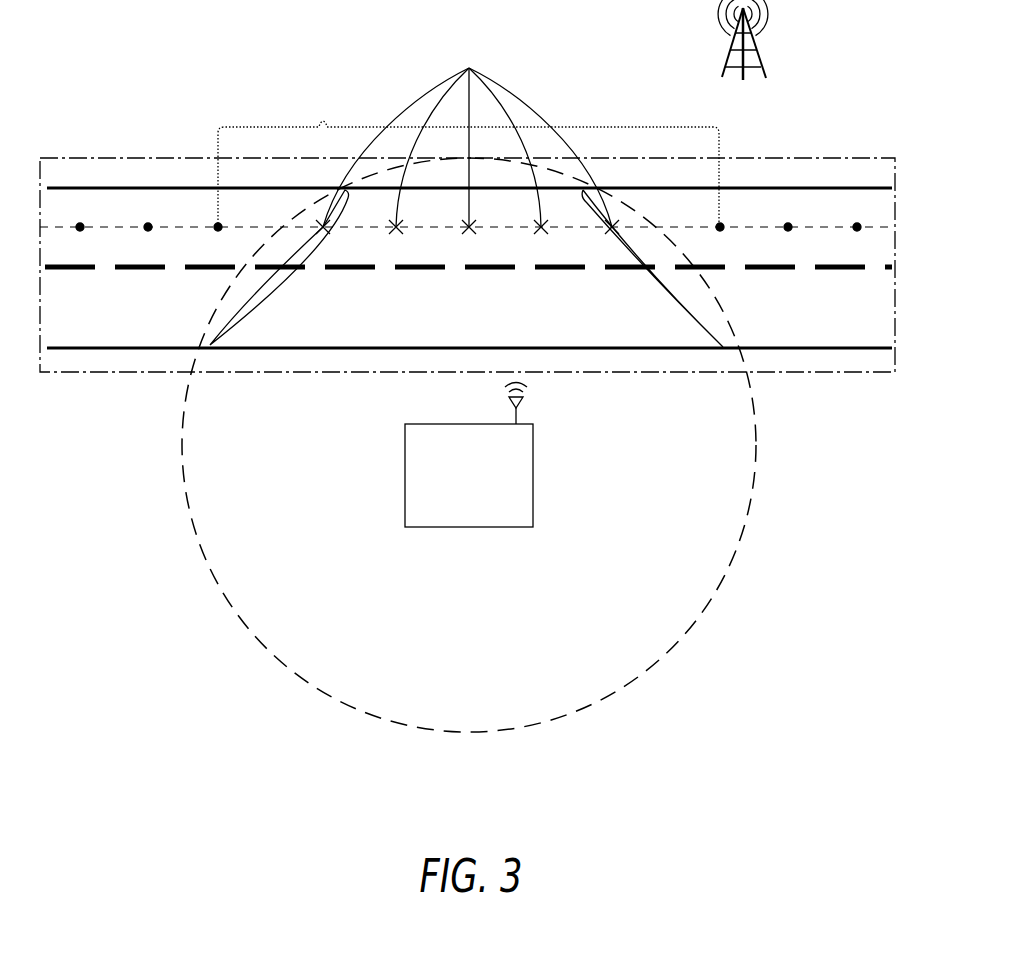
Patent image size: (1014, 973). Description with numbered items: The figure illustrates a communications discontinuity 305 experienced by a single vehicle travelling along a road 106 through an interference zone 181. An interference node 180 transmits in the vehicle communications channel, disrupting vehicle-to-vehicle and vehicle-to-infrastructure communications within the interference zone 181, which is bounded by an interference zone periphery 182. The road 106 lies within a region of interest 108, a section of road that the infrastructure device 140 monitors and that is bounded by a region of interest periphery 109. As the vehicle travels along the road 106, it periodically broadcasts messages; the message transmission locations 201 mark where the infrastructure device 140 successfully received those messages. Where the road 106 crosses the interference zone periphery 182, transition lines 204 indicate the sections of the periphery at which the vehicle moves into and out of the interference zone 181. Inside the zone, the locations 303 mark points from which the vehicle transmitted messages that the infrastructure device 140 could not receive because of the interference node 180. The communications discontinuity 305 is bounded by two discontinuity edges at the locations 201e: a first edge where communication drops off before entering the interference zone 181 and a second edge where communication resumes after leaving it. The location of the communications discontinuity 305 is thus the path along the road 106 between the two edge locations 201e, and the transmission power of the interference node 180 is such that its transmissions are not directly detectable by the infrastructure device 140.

The road 106 is at (137, 349).
The region of interest 108 is at (246, 165).
The region of interest periphery 109 is at (618, 157).
The infrastructure device 140 is at (767, 62).
The interference node 180 is at (460, 514).
The interference zone 181 is at (460, 672).
The interference zone periphery 182 is at (637, 675).
The message transmission locations 201 is at (80, 224).
The discontinuity edge locations 201e is at (218, 224).
The transition lines 204 is at (268, 284).
The unreceived transmission locations 303 is at (467, 135).
The communications discontinuity 305 is at (468, 159).